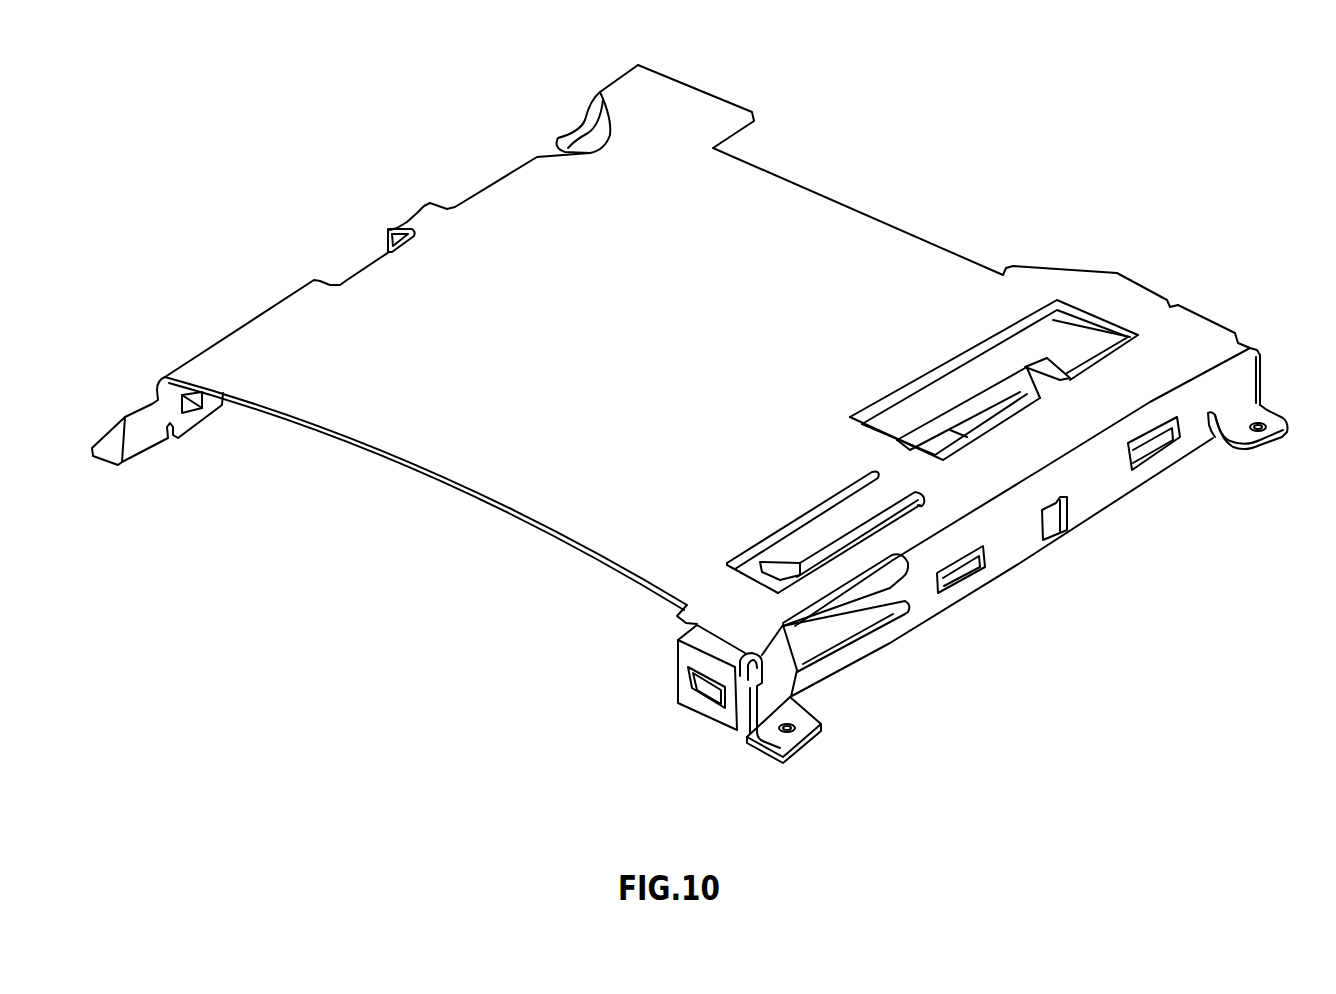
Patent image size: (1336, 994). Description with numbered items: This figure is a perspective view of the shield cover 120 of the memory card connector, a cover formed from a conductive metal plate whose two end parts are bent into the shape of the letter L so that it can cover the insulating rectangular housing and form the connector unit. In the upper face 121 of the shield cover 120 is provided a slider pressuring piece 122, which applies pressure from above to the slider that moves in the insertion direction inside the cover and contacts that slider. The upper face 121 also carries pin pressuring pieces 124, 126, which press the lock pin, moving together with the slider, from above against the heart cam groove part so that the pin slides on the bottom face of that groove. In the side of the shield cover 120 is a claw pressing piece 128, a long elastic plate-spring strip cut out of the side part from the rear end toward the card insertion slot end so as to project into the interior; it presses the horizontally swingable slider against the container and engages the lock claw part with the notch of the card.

The shield cover 120 is at (856, 226).
The upper face 121 is at (750, 197).
The slider pressuring piece 122 is at (827, 533).
The pin pressuring piece 124 is at (993, 400).
The pin pressuring piece 126 is at (980, 380).
The claw pressing piece 128 is at (840, 603).